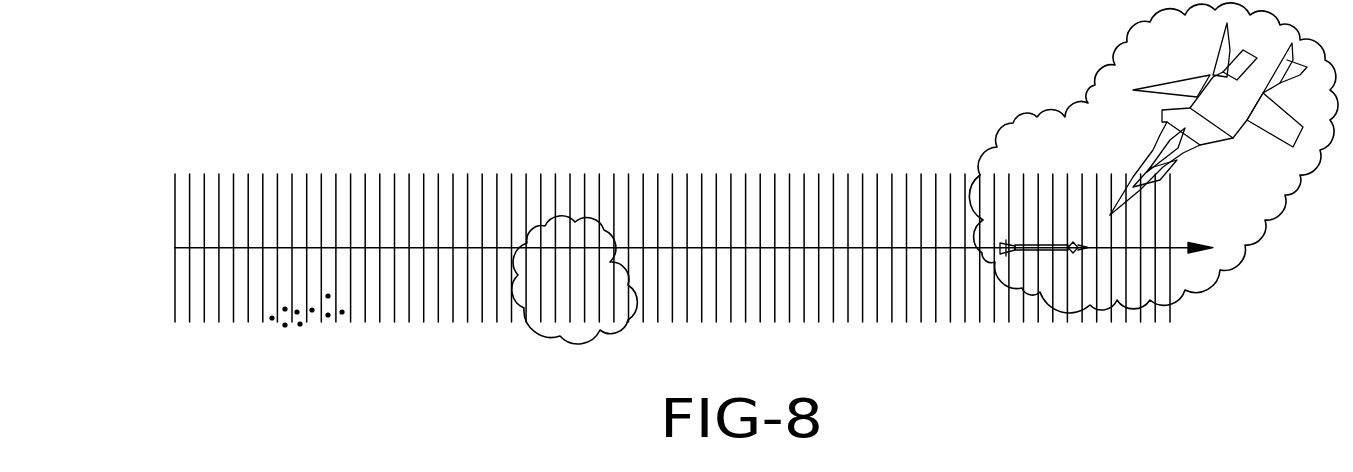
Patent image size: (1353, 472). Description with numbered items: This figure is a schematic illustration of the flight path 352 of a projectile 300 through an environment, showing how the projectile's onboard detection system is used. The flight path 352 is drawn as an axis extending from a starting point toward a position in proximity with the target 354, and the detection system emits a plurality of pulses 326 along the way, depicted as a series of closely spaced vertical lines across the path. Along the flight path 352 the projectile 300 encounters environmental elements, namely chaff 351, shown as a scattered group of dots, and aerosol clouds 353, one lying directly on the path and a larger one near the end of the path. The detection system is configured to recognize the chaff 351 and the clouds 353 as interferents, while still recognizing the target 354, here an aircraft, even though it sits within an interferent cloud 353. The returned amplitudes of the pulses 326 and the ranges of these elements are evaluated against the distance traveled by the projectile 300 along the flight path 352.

The projectile 300 is at (1047, 252).
The pulses 326 is at (218, 188).
The chaff 351 is at (317, 342).
The flight path 352 is at (173, 248).
The clouds 353 is at (578, 317).
The target 354 is at (1175, 82).